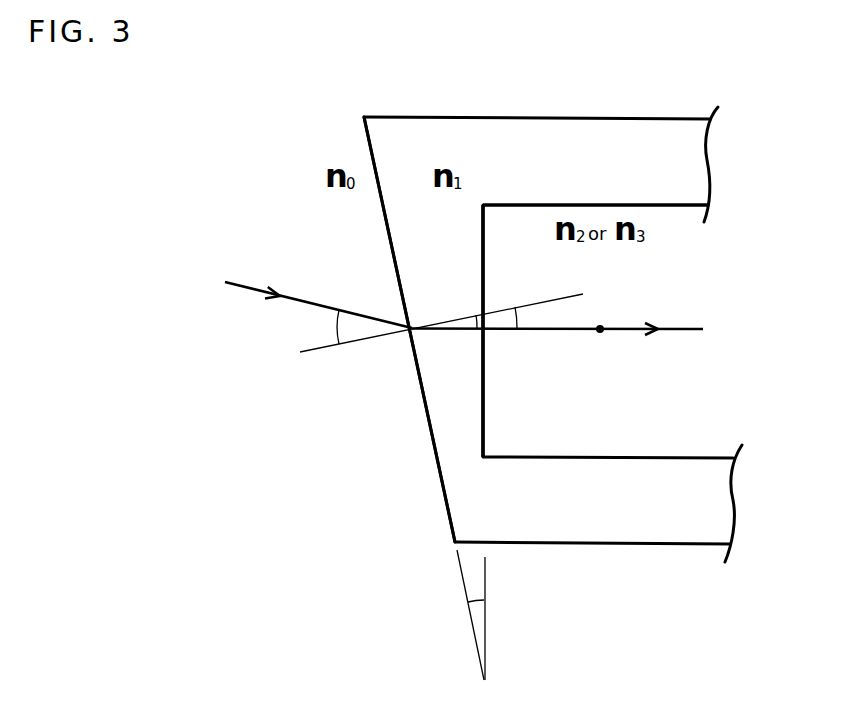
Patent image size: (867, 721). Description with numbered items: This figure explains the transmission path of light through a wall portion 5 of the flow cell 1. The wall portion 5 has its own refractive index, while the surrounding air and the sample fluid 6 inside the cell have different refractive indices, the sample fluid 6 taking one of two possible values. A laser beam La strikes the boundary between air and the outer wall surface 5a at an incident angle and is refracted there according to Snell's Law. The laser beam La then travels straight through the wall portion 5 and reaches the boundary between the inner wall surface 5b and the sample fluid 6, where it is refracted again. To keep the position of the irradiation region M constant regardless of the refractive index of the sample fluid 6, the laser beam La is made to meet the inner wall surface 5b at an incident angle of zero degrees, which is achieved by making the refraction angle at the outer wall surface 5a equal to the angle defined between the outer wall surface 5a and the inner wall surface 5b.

The flow cell 1 is at (515, 97).
The wall portion 5 is at (607, 130).
The outer wall surface 5a is at (428, 414).
The inner wall surface 5b is at (483, 415).
The sample fluid 6 is at (683, 275).
The laser beam La is at (246, 284).
The irradiation region M is at (601, 333).